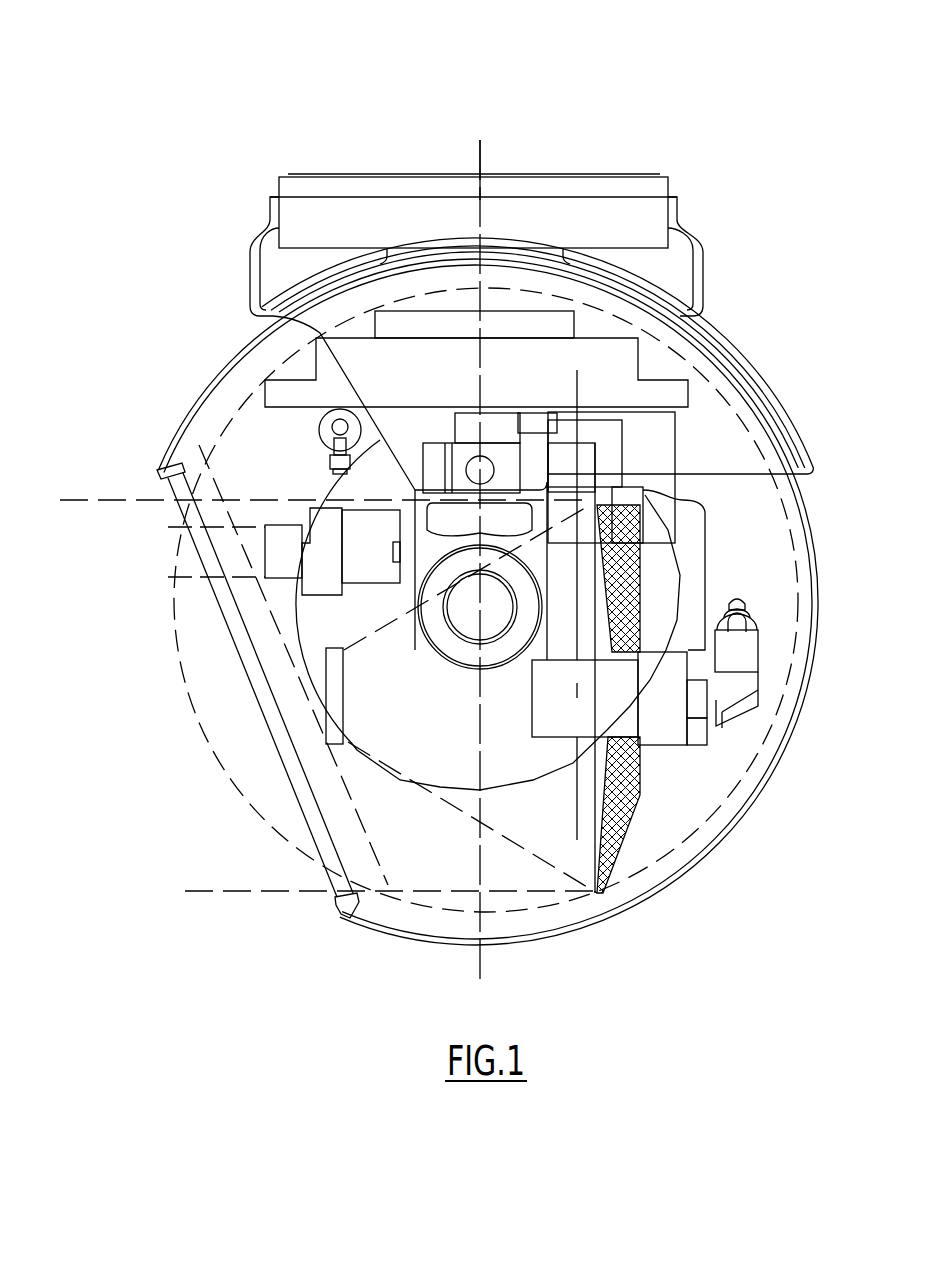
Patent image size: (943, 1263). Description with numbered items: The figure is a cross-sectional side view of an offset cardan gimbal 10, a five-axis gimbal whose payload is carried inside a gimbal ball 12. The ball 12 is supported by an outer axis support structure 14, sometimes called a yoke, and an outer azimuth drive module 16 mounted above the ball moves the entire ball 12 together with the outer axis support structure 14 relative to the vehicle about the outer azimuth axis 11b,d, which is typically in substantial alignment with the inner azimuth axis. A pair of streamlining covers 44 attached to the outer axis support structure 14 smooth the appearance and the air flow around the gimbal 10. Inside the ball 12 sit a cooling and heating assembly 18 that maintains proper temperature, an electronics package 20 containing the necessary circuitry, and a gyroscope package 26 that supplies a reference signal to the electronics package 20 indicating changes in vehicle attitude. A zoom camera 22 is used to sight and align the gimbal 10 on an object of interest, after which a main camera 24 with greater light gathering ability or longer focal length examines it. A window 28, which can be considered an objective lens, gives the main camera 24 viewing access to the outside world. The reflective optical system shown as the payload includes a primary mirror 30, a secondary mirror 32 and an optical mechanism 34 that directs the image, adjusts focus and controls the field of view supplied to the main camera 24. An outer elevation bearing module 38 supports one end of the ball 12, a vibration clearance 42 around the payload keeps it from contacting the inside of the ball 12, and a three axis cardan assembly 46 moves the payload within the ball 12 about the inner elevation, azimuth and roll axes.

The offset cardan gimbal 10 is at (790, 65).
The outer azimuth axis and inner azimuth axis 11b,d is at (481, 148).
The gimbal ball 12 is at (803, 749).
The outer axis support structure 14 is at (737, 342).
The outer azimuth drive module 16 is at (436, 166).
The cooling and heating assembly 18 is at (514, 308).
The electronics package 20 is at (612, 337).
The zoom camera 22 is at (286, 527).
The main camera 24 is at (640, 484).
The gyroscope package 26 is at (686, 487).
The window 28 is at (292, 795).
The primary mirror 30 is at (613, 611).
The secondary mirror 32 is at (324, 665).
The optical mechanism 34 is at (561, 742).
The outer elevation bearing module 38 is at (545, 640).
The vibration clearance 42 is at (804, 573).
The streamlining covers 44 is at (511, 793).
The three axis cardan assembly 46 is at (489, 458).